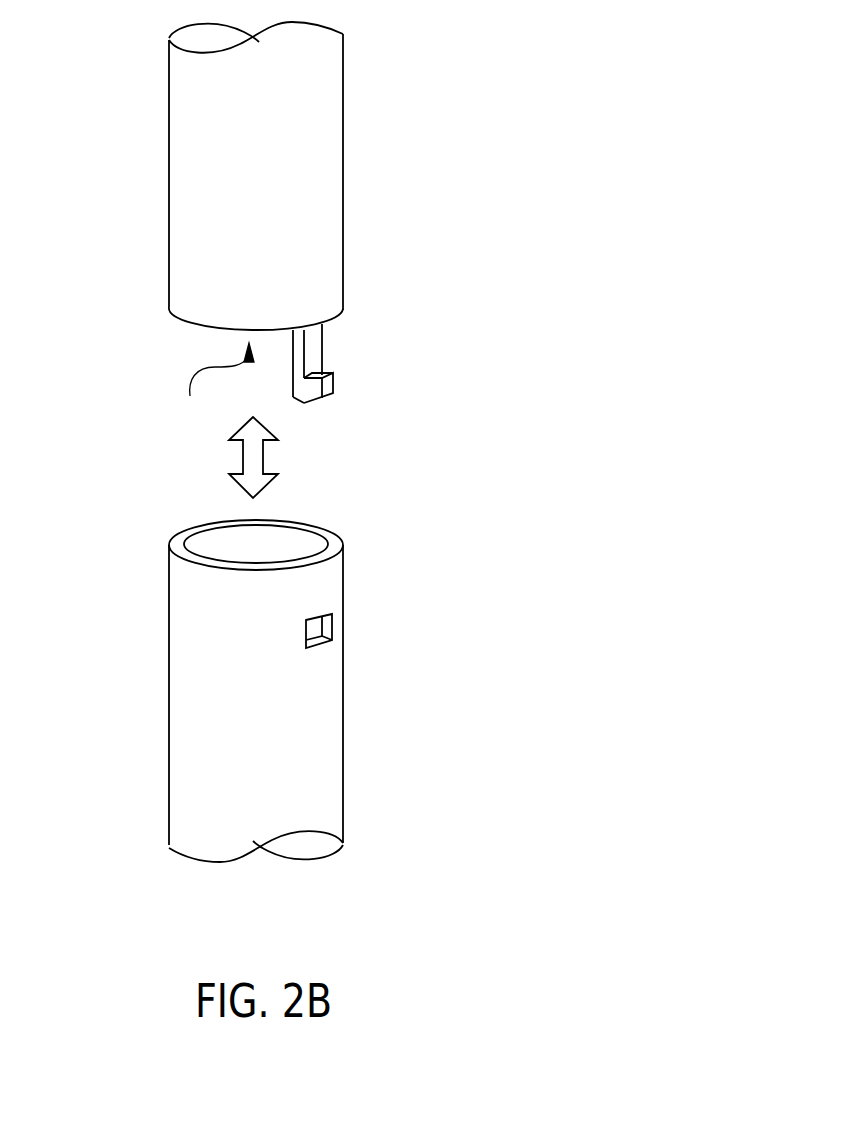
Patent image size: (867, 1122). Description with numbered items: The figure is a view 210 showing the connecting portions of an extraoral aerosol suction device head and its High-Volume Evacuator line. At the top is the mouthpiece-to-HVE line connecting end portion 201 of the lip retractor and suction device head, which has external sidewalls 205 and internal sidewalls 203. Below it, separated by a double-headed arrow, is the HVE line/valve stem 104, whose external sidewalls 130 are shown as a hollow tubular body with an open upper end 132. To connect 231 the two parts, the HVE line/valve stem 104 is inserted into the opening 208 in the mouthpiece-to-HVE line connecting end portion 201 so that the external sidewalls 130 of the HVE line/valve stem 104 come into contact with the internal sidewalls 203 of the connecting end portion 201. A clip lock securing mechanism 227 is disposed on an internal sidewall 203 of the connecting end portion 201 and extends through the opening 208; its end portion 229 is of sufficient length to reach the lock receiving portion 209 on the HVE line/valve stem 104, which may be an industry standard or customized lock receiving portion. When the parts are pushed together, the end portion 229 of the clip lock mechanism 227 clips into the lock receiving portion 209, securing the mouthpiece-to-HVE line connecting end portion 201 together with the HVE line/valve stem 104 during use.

The view 210 is at (550, 65).
The mouthpiece-to-HVE line connecting end portion 201 is at (169, 202).
The external sidewalls 205 is at (343, 118).
The internal sidewalls 203 is at (198, 326).
The opening 208 is at (212, 383).
The clip lock securing mechanism 227 is at (322, 347).
The end portion of the clip lock mechanism 229 is at (333, 387).
The connection 231 is at (243, 461).
The HVE line/valve stem 104 is at (169, 738).
The external sidewalls 130 is at (313, 722).
The opening 132 is at (305, 545).
The lock receiving portion 209 is at (333, 632).